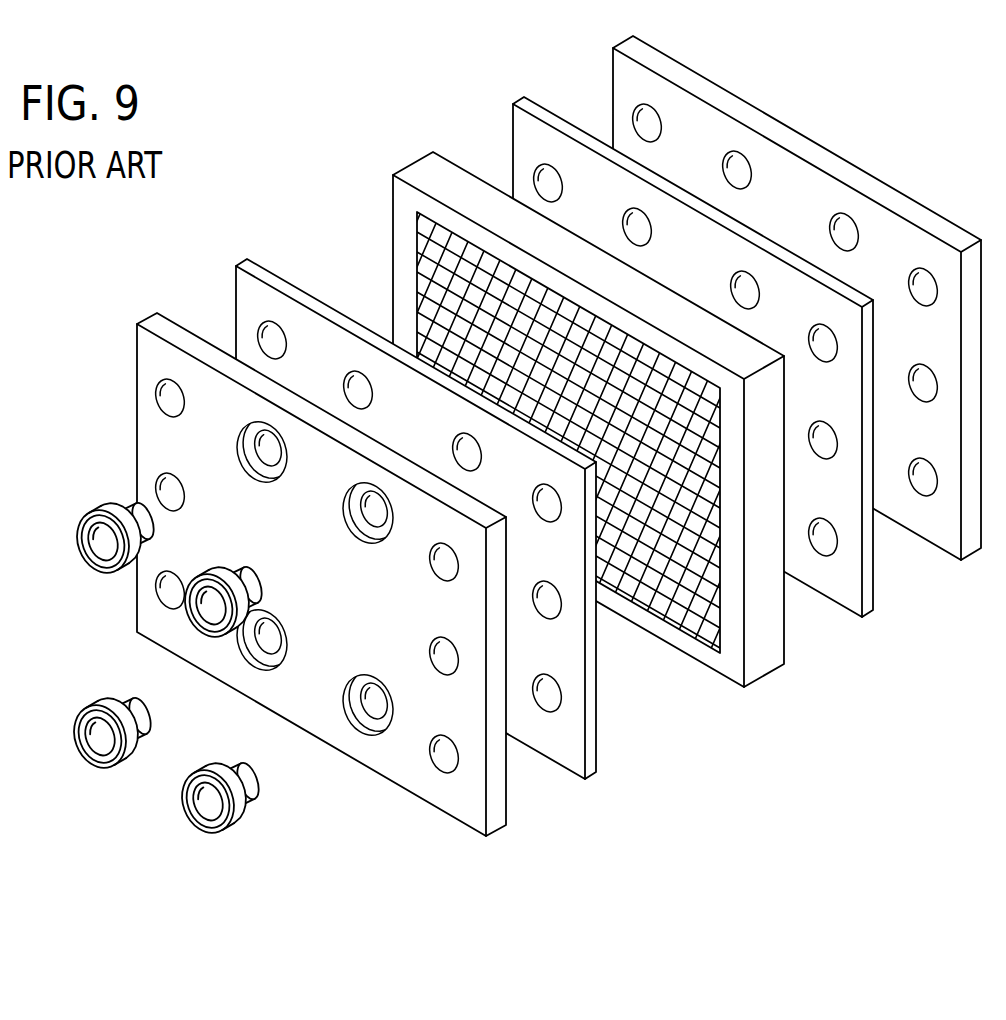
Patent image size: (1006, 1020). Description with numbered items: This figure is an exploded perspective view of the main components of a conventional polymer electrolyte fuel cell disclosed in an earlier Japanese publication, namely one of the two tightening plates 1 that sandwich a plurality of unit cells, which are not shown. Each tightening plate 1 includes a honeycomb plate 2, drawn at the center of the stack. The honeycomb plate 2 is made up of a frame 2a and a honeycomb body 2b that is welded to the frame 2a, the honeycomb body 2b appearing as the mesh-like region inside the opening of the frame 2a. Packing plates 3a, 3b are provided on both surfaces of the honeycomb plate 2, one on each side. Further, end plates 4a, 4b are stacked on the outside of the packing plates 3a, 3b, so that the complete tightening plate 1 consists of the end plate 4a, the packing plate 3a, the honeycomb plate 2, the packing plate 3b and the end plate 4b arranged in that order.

The tightening plate 1 is at (295, 141).
The honeycomb plate 2 is at (540, 434).
The frame 2a is at (762, 657).
The honeycomb body 2b is at (663, 592).
The packing plate 3a is at (588, 773).
The packing plate 3b is at (867, 607).
The end plate 4a is at (495, 817).
The end plate 4b is at (970, 538).